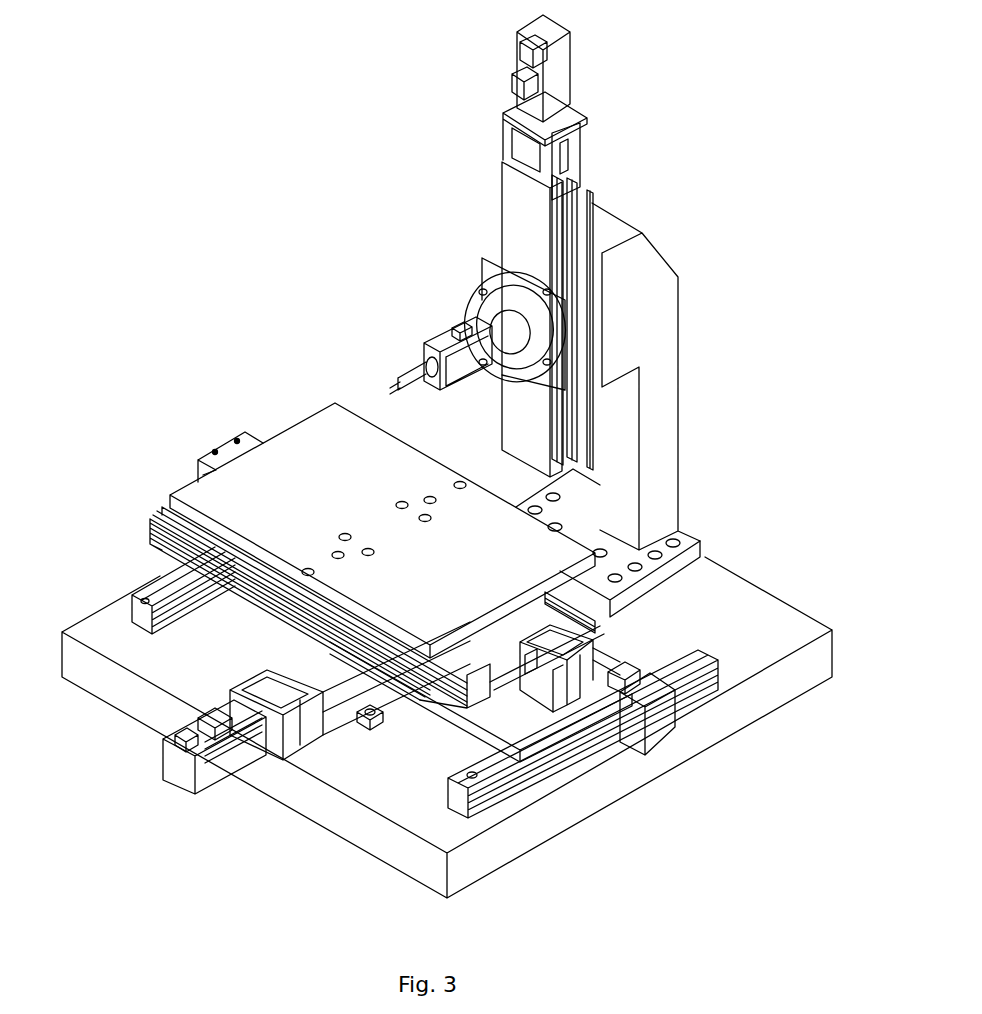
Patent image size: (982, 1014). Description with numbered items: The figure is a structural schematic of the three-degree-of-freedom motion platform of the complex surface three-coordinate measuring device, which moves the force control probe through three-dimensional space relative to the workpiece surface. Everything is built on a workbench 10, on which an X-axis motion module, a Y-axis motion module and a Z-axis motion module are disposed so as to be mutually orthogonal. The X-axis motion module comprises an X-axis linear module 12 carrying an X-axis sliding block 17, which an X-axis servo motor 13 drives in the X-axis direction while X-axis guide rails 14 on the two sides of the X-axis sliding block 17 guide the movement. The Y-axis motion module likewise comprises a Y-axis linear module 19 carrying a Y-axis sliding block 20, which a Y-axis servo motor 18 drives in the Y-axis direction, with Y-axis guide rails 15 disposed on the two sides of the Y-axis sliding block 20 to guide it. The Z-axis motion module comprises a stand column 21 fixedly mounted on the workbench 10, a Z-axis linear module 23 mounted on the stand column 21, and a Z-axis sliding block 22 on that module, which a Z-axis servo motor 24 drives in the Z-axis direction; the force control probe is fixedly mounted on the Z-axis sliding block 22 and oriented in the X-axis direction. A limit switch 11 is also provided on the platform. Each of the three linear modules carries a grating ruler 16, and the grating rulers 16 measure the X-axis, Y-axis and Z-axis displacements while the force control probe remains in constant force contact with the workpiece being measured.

The workbench 10 is at (381, 943).
The limit switch 11 is at (303, 894).
The X-axis linear module 12 is at (253, 868).
The X-axis servo motor 13 is at (208, 841).
The X-axis guide rail 14 is at (101, 778).
The Y-axis guide rail 15 is at (632, 889).
The grating ruler 16 is at (672, 868).
The X-axis sliding block 17 is at (718, 843).
The Y-axis servo motor 18 is at (758, 819).
The Y-axis linear module 19 is at (864, 758).
The Y-axis sliding block 20 is at (797, 466).
The stand column 21 is at (797, 401).
The Z-axis sliding block 22 is at (797, 221).
The Z-axis linear module 23 is at (797, 126).
The Z-axis servo motor 24 is at (797, 31).